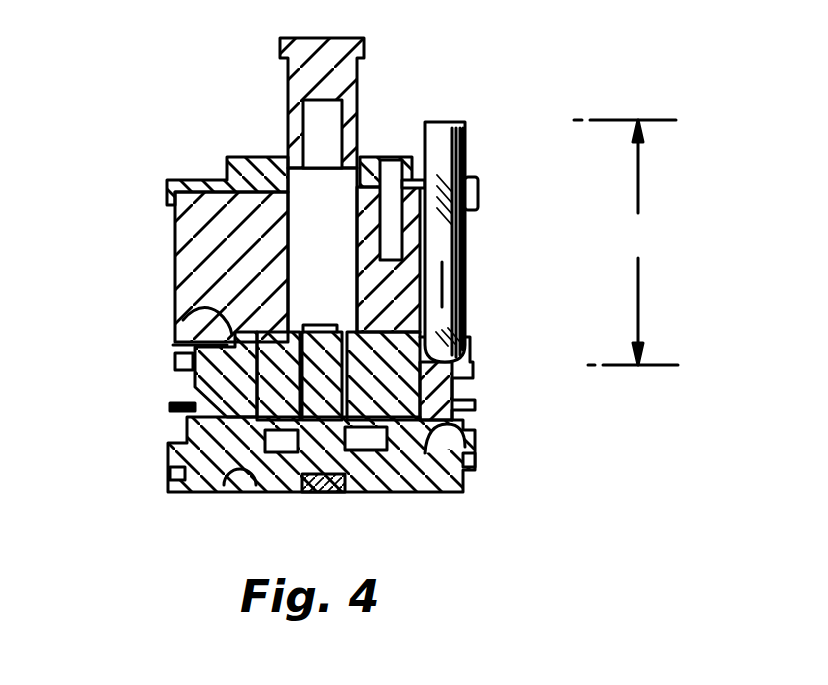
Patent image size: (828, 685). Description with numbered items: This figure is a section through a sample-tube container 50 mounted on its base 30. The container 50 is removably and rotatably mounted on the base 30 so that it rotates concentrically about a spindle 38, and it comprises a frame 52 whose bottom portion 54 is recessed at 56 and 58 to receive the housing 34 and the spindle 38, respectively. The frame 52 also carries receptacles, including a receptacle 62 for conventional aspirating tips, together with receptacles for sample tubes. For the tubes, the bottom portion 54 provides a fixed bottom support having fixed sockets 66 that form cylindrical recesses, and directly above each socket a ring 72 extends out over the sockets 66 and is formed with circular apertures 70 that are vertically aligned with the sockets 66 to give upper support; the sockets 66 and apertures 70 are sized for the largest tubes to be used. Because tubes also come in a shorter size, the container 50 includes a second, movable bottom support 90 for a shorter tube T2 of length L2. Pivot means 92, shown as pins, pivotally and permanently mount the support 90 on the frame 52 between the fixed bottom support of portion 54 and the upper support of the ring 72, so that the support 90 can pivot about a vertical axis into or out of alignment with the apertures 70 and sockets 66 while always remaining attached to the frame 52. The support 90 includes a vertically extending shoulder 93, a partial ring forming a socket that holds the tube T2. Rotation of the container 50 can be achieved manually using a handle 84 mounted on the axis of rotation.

The base 30 is at (420, 517).
The housing 34 is at (386, 487).
The spindle 38 is at (322, 340).
The container 50 is at (147, 180).
The frame 52 is at (173, 239).
The bottom portion 54 is at (483, 458).
The recess 56 is at (242, 495).
The recess 58 is at (255, 455).
The receptacle 62 is at (390, 173).
The socket 66 is at (465, 428).
The aperture 70 is at (480, 181).
The ring 72 is at (477, 200).
The handle 84 is at (358, 54).
The movable bottom support 90 is at (475, 365).
The pivot means 92 is at (178, 318).
The shoulder 93 is at (175, 362).
The tube T2 is at (437, 144).
The length L2 is at (626, 242).